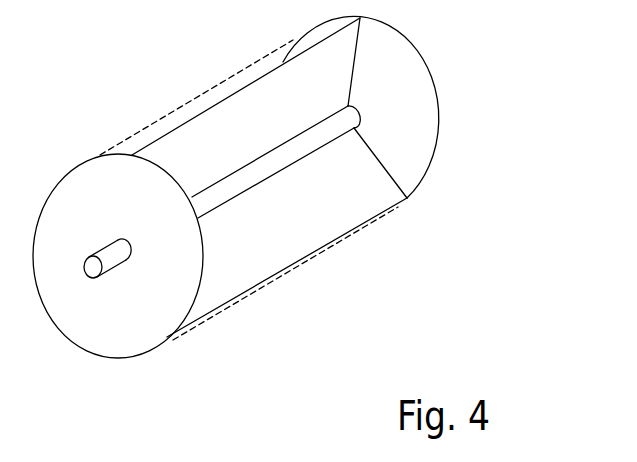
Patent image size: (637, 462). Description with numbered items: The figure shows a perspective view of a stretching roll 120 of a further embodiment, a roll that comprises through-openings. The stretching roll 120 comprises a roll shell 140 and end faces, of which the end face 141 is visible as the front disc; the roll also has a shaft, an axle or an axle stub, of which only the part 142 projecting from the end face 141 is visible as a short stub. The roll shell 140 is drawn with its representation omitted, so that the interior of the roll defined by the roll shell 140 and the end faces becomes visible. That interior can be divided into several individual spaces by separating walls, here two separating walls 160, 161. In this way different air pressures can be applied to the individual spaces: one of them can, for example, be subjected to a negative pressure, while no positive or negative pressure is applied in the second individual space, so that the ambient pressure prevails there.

The stretching roll 120 is at (450, 237).
The roll shell 140 is at (398, 115).
The end face 141 is at (171, 257).
The projecting part 142 is at (110, 262).
The separating wall 160 is at (375, 182).
The separating wall 161 is at (336, 60).